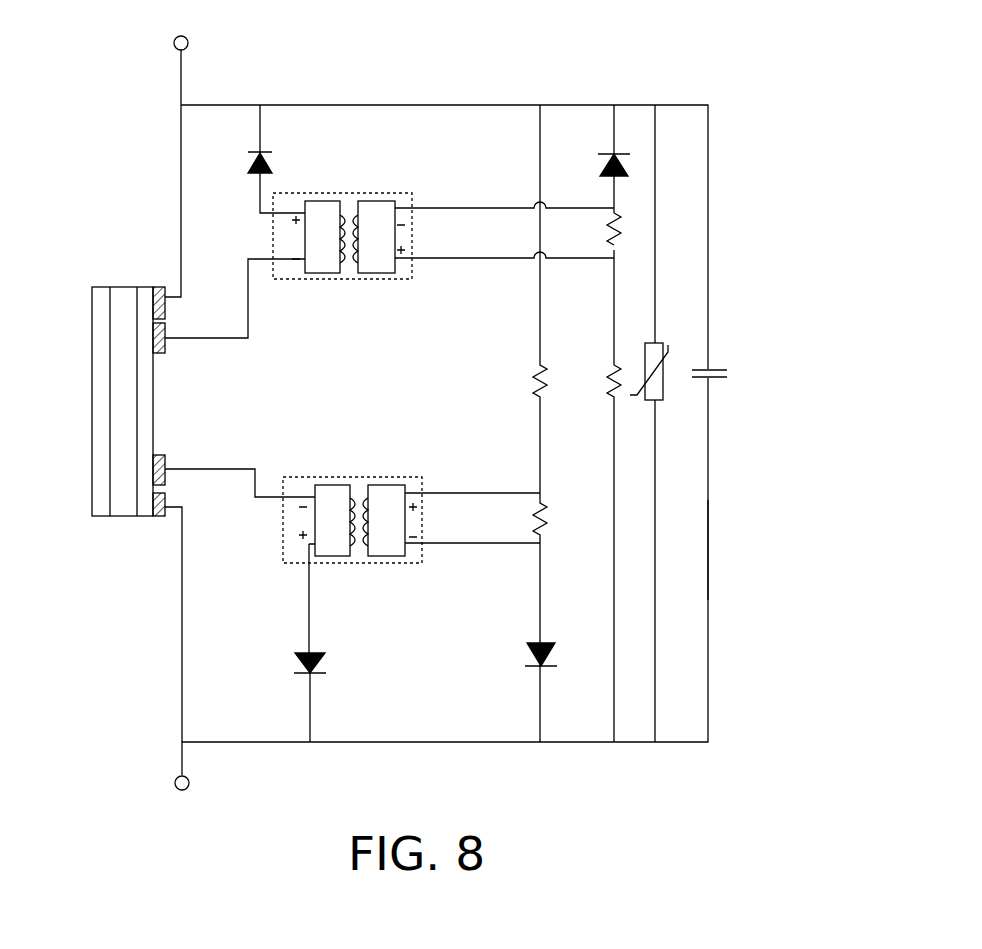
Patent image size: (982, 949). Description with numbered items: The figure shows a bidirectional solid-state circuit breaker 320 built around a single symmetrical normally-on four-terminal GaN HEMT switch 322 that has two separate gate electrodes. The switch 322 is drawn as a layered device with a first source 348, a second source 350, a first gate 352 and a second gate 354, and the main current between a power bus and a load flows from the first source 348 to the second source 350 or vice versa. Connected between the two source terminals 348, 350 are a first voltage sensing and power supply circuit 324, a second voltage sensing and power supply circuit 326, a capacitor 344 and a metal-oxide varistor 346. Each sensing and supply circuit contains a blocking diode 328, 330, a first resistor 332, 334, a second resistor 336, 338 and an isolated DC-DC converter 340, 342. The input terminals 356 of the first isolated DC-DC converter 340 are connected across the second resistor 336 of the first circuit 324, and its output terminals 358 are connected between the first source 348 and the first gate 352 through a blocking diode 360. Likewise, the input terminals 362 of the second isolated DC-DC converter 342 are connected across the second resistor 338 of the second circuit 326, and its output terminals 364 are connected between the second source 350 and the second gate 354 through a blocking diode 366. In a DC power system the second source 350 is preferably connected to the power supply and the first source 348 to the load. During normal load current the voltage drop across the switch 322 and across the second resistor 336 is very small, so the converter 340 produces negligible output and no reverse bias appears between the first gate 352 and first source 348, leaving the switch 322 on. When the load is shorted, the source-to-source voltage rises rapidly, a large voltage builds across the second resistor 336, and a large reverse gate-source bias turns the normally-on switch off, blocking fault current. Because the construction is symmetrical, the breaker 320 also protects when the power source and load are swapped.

The bidirectional solid-state circuit breaker 320 is at (570, 73).
The symmetrical four-terminal normally-on GaN HEMT switch 322 is at (100, 462).
The first voltage sensing and power supply circuit 324 is at (728, 536).
The second voltage sensing and power supply circuit 326 is at (728, 247).
The blocking diode 328 is at (543, 642).
The blocking diode 330 is at (612, 152).
The first resistor 332 is at (535, 395).
The first resistor 334 is at (612, 395).
The second resistor 336 is at (545, 510).
The second resistor 338 is at (615, 225).
The first isolated DC-DC converter 340 is at (410, 477).
The second isolated DC-DC converter 342 is at (400, 192).
The capacitor 344 is at (710, 365).
The metal-oxide varistor 346 is at (663, 395).
The first source 348 is at (160, 517).
The second source 350 is at (160, 287).
The first gate 352 is at (165, 455).
The second gate 354 is at (165, 345).
The input terminals 356 is at (422, 493).
The output terminals 358 is at (312, 497).
The blocking diode 360 is at (312, 652).
The input terminals 362 is at (412, 210).
The output terminals 364 is at (275, 213).
The blocking diode 366 is at (262, 152).